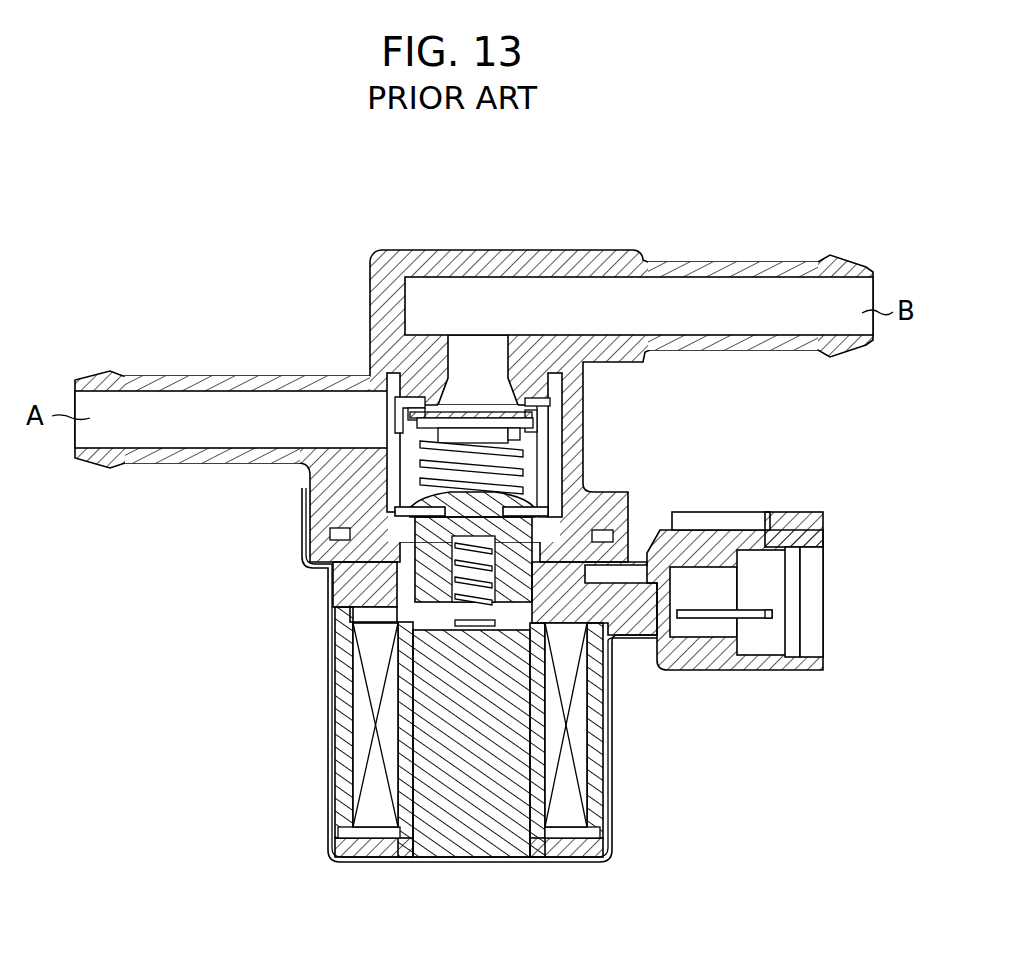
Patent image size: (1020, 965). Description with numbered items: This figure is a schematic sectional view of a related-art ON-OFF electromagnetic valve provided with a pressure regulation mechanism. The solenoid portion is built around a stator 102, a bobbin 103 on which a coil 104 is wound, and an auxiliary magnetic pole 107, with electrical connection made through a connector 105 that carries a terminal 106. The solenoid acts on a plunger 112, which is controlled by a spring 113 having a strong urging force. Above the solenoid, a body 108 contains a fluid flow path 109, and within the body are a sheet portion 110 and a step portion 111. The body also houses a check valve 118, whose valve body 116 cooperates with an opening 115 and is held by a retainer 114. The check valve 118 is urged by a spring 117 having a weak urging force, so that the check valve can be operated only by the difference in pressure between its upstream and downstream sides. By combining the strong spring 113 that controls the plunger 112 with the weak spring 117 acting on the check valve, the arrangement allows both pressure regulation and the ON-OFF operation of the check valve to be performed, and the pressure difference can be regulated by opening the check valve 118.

The stator 102 is at (447, 830).
The bobbin 103 is at (548, 847).
The coil 104 is at (570, 805).
The connector 105 is at (685, 655).
The terminal 106 is at (747, 620).
The auxiliary magnetic pole 107 is at (323, 552).
The body 108 is at (590, 258).
The fluid flow path 109 is at (736, 300).
The sheet portion 110 is at (404, 396).
The step portion 111 is at (420, 418).
The plunger 112 is at (403, 592).
The spring 113 is at (452, 603).
The retainer 114 is at (548, 424).
The opening 115 is at (542, 398).
The valve body 116 is at (422, 432).
The spring 117 is at (420, 462).
The check valve 118 is at (520, 438).